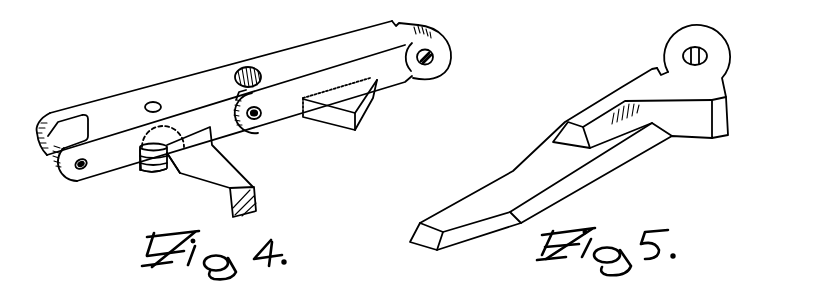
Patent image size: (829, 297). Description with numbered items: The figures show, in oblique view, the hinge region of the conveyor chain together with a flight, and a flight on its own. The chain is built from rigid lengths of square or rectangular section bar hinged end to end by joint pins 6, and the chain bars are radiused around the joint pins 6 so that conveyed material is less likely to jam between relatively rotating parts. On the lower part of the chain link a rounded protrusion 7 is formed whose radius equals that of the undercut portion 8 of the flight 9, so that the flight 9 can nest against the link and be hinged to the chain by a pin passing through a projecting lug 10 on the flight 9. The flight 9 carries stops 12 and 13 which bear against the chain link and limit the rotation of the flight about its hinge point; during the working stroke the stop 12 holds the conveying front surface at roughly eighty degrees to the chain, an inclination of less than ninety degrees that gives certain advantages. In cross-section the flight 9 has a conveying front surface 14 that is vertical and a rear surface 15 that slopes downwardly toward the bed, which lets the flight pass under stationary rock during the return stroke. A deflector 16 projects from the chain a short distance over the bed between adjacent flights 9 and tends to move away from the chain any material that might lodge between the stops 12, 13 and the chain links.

In FIG. 4, the joint pin 6 is at (257, 118).
In FIG. 4, the rounded protrusion 7 is at (143, 167).
In FIG. 4, the undercut portion 8 is at (158, 183).
In FIG. 4, the flight 9 is at (233, 182).
In FIG. 5, the flight 9 is at (513, 182).
In FIG. 4, the projecting lug 10 is at (157, 153).
In FIG. 5, the projecting lug 10 is at (670, 50).
In FIG. 5, the stop 12 is at (721, 78).
In FIG. 4, the stop 13 is at (177, 167).
In FIG. 5, the stop 13 is at (663, 63).
In FIG. 5, the conveying front surface 14 is at (472, 192).
In FIG. 5, the rear surface 15 is at (570, 187).
In FIG. 4, the deflector 16 is at (335, 120).